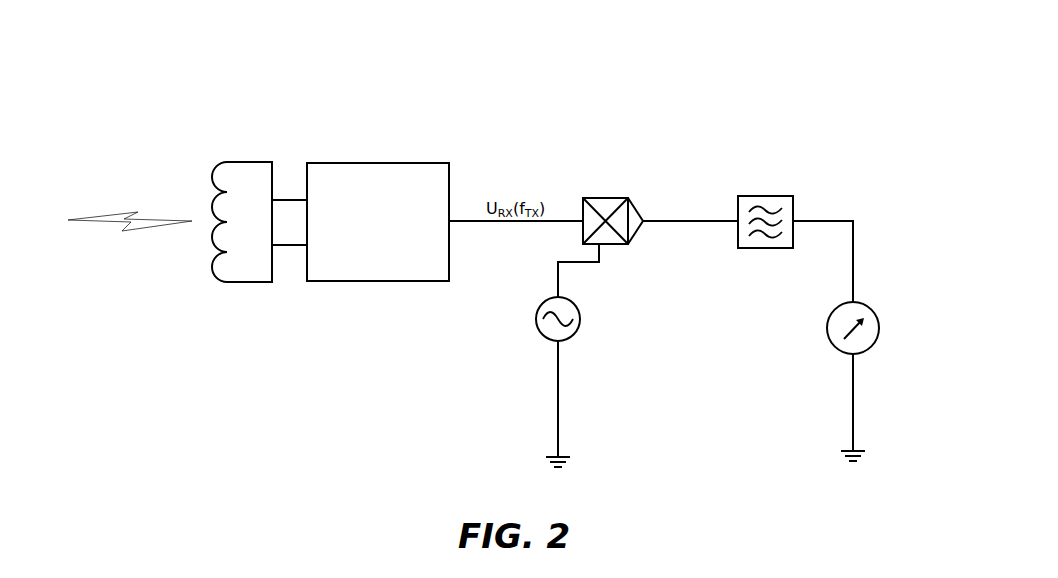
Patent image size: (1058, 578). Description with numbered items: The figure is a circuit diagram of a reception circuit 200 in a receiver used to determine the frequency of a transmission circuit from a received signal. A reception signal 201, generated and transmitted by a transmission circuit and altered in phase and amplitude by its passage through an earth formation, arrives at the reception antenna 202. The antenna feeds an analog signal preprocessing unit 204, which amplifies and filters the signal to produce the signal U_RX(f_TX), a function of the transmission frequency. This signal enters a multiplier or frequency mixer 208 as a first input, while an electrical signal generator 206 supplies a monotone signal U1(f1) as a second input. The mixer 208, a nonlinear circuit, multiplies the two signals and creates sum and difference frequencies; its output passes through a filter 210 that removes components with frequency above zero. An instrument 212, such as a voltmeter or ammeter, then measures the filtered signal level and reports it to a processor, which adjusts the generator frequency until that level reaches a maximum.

The reception circuit 200 is at (197, 80).
The reception signal 201 is at (133, 210).
The reception antenna 202 is at (212, 163).
The analog signal preprocessing unit 204 is at (393, 233).
The electrical signal generator 206 is at (566, 339).
The multiplier (frequency mixer) 208 is at (613, 198).
The filter 210 is at (773, 196).
The instrument 212 is at (872, 346).